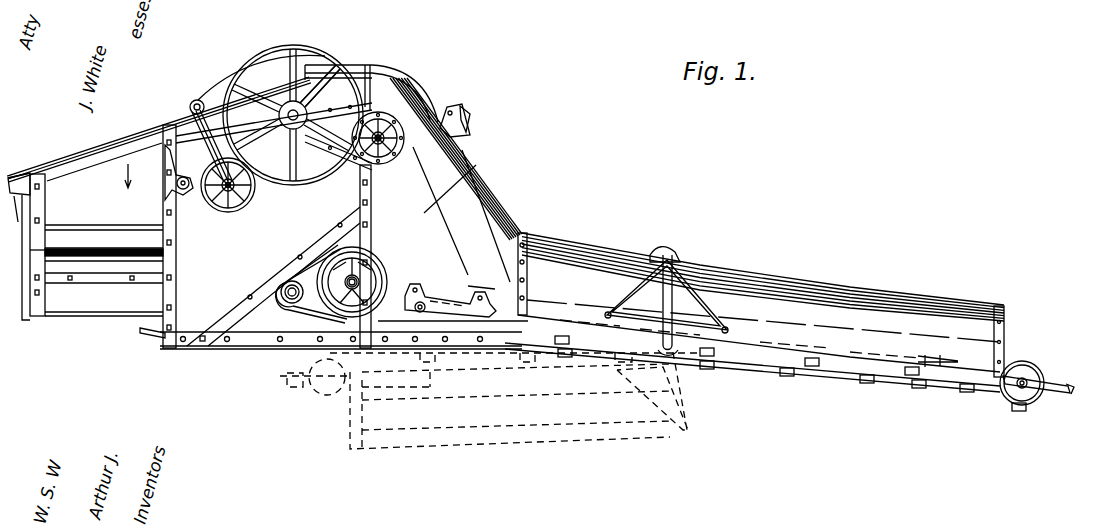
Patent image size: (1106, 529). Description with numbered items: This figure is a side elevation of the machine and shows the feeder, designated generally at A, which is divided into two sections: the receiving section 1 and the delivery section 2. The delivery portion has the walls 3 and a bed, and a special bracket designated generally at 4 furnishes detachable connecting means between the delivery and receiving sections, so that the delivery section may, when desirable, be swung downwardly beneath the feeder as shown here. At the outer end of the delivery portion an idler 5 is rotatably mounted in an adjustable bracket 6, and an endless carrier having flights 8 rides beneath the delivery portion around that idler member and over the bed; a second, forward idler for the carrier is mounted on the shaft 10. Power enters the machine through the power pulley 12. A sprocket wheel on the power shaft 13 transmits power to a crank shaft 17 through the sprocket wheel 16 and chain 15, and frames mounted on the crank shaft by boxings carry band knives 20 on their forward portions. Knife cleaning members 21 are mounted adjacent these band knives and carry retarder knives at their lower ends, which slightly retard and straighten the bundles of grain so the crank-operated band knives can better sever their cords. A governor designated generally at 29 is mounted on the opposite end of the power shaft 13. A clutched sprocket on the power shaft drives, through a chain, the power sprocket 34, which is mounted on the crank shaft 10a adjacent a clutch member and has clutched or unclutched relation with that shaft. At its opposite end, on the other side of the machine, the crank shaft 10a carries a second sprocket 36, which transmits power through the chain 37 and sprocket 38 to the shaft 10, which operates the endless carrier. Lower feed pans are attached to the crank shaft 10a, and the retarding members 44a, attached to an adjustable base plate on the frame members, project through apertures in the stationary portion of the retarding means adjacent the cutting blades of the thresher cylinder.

The receiving section 1 is at (538, 178).
The delivery section 2 is at (904, 292).
The walls 3 is at (1000, 310).
The bracket 4 is at (686, 255).
The idler 5 is at (1040, 370).
The adjustable bracket 6 is at (1018, 388).
The flights 8 is at (17, 163).
The shaft 10 is at (285, 290).
The crank shaft 10a is at (350, 286).
The power pulley 12 is at (322, 52).
The power shaft 13 is at (293, 108).
The chain 15 is at (330, 90).
The sprocket wheel 16 is at (405, 125).
The crank shaft 17 is at (445, 112).
The band knives 20 is at (468, 121).
The knife cleaning members 21 is at (395, 68).
The governor 29 is at (252, 78).
The power sprocket 34 is at (22, 259).
The second sprocket 36 is at (300, 280).
The chain 37 is at (300, 312).
The sprocket 38 is at (386, 264).
The retarding members 44a is at (150, 336).
The feeder A is at (458, 179).